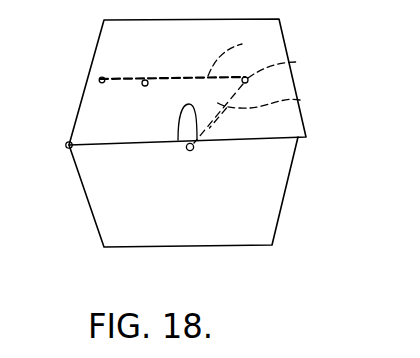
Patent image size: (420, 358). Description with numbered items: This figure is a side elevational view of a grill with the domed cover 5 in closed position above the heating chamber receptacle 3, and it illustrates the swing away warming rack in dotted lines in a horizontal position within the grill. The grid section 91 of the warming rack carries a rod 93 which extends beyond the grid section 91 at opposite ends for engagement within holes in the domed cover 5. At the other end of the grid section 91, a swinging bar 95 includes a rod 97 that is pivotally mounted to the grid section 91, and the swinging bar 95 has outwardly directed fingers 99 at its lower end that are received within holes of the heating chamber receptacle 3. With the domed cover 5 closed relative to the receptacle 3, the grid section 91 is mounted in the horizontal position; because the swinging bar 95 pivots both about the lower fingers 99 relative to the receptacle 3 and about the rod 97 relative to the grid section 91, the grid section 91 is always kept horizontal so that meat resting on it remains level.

The heating chamber receptacle 3 is at (118, 186).
The domed cover 5 is at (99, 103).
The grid section 91 is at (242, 54).
The rod 93 is at (145, 88).
The swinging bar 95 is at (298, 99).
The rod 97 is at (286, 66).
The outwardly directed fingers 99 is at (194, 151).